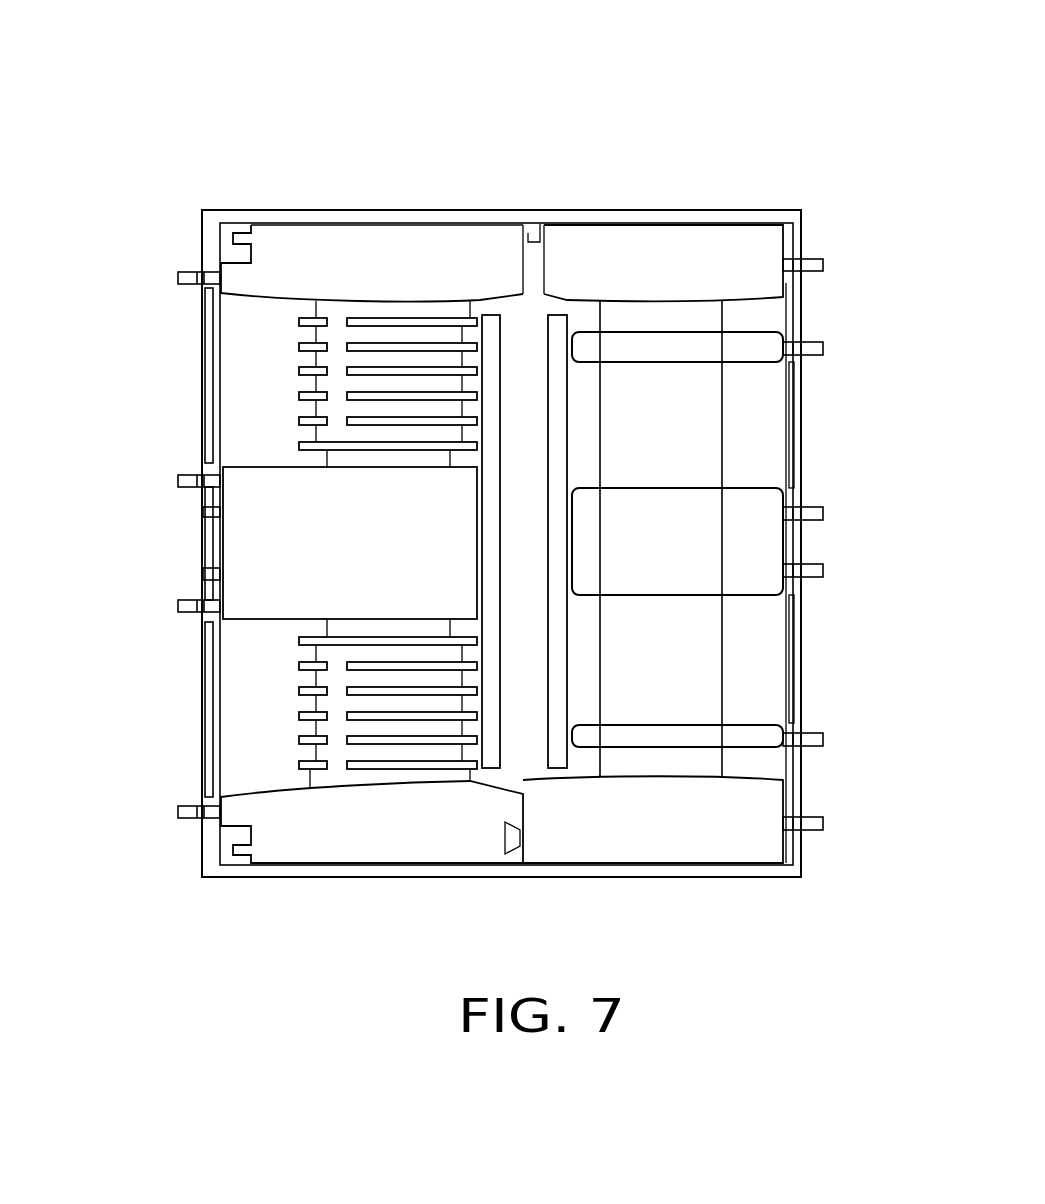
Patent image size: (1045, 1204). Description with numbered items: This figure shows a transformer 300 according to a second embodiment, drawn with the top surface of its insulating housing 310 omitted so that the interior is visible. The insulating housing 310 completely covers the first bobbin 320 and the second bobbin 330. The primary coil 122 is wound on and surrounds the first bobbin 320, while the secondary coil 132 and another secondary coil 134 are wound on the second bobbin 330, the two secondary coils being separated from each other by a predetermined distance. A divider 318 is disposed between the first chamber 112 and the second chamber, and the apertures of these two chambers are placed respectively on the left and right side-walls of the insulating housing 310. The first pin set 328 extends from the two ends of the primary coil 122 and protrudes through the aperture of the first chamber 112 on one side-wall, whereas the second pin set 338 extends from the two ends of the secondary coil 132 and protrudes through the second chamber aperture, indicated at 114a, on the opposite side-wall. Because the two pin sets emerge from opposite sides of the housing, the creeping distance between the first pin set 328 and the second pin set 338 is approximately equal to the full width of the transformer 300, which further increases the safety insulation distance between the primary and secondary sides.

The transformer 300 is at (905, 56).
The insulating housing 310 is at (623, 211).
The second bobbin 330 is at (363, 238).
The first bobbin 320 is at (723, 238).
The divider 318 is at (558, 323).
The secondary coil 132 is at (175, 320).
The secondary coil 134 is at (175, 642).
The side plate 114a is at (196, 307).
The second pin set 338 is at (177, 482).
The first pin set 328 is at (823, 349).
The first chamber 112 is at (811, 308).
The primary coil 122 is at (815, 365).